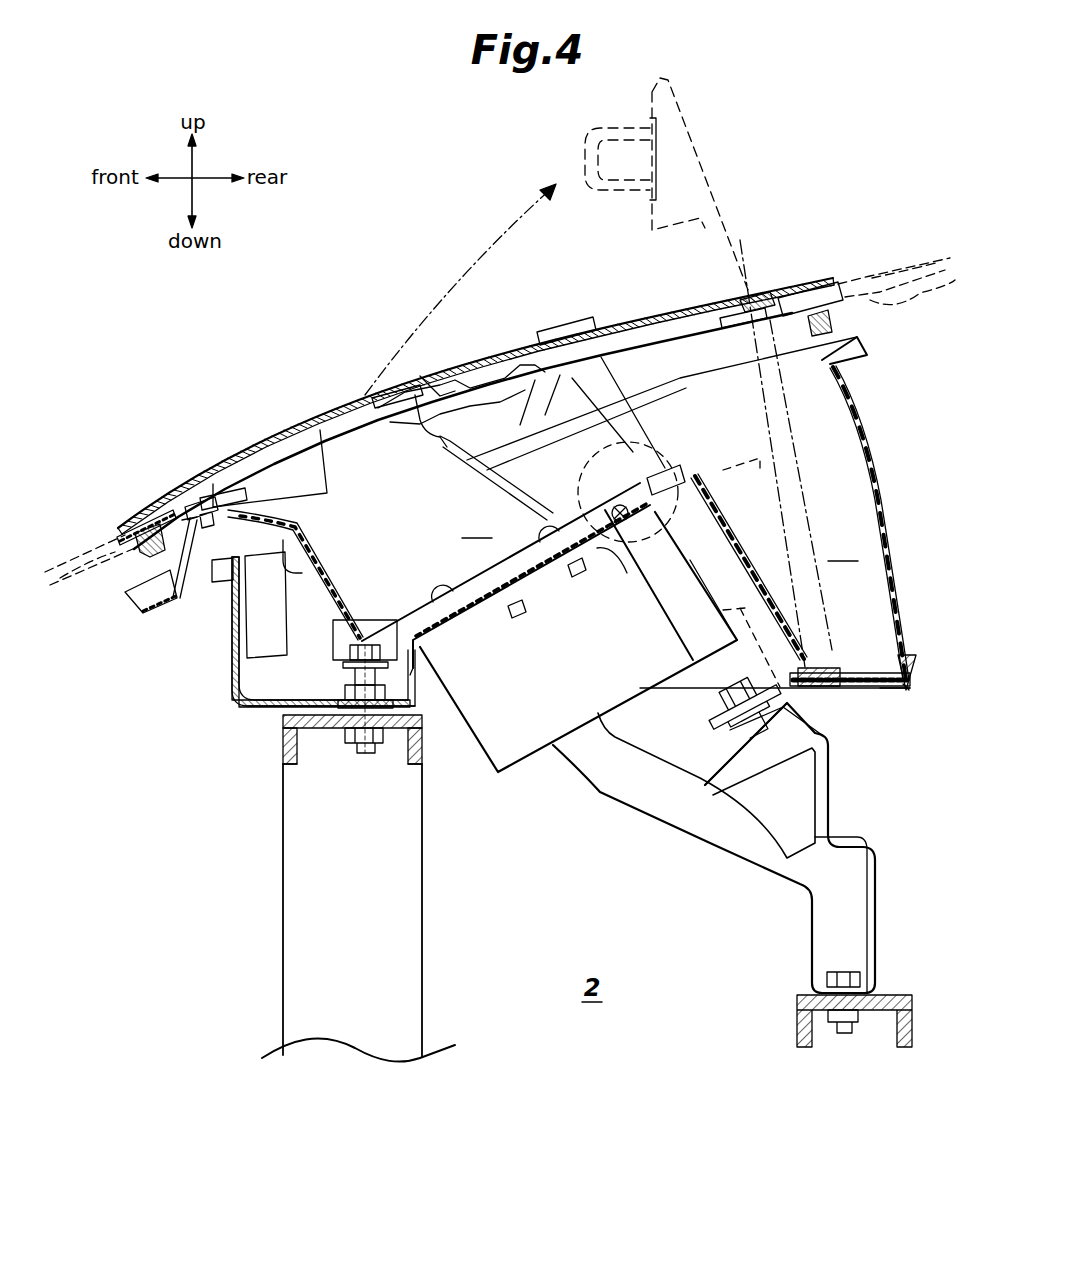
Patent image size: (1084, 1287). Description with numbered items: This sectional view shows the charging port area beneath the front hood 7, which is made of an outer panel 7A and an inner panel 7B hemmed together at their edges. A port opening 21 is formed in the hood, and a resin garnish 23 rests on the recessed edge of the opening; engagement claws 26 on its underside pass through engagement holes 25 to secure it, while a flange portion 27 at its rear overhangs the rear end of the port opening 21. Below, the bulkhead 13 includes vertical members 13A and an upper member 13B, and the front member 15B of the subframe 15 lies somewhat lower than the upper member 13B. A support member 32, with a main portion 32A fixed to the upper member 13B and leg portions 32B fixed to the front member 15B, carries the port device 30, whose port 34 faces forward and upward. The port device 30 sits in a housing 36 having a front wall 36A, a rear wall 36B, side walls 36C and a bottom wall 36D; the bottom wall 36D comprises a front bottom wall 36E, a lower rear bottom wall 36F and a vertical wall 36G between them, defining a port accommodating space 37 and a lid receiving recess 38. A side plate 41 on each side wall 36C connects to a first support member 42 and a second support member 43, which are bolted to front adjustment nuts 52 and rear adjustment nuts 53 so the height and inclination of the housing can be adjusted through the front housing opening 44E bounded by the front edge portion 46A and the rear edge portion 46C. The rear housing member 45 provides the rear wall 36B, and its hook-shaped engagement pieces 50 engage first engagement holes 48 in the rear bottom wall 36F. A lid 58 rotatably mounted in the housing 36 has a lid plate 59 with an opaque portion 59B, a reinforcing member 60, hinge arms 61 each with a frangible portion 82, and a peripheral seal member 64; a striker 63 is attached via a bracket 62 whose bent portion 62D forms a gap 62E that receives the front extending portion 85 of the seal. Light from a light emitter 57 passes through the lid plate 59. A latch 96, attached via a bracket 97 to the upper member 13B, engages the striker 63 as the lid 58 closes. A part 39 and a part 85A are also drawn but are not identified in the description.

The front hood 7 is at (938, 262).
The outer panel 7A is at (893, 265).
The inner panel 7B is at (918, 296).
The bulkhead 13 is at (342, 908).
The vertical members 13A is at (422, 950).
The upper member 13B is at (300, 755).
The subframe 15 is at (810, 1066).
The front member 15B is at (800, 1048).
The port opening 21 is at (785, 300).
The garnish 23 is at (795, 297).
The engagement holes 25 is at (812, 305).
The engagement claws 26 is at (862, 330).
The flange portion 27 is at (748, 298).
The port device 30 is at (503, 714).
The support member 32 is at (620, 797).
The main portion 32A is at (545, 585).
The leg portions 32B is at (813, 870).
The port 34 is at (447, 580).
The housing 36 is at (891, 508).
The front wall 36A is at (318, 560).
The rear wall 36B is at (880, 505).
The side walls 36C is at (603, 330).
The bottom wall 36D is at (850, 690).
The front bottom wall 36E is at (370, 757).
The rear bottom wall 36F is at (892, 690).
The vertical wall 36G is at (722, 542).
The port accommodating space 37 is at (285, 600).
The lid receiving recess 38 is at (800, 453).
The reinforcement 39 is at (496, 487).
The side plate 41 is at (295, 695).
The first support member 42 is at (300, 700).
The second support member 43 is at (700, 690).
The front housing opening 44E is at (473, 610).
The rear housing member 45 is at (904, 418).
The front edge portion 46A is at (180, 587).
The rear edge portion 46C is at (838, 690).
The first engagement holes 48 is at (903, 668).
The engagement pieces 50 is at (910, 686).
The front adjustment nuts 52 is at (305, 722).
The rear adjustment nuts 53 is at (760, 775).
The light emitter 57 is at (665, 470).
The lid 58 is at (455, 248).
The lid plate 59 is at (672, 305).
The opaque portion 59B is at (447, 385).
The reinforcing member 60 is at (500, 365).
The hinge arms 61 is at (420, 376).
The bracket 62 is at (345, 428).
The bent portion 62D is at (233, 437).
The gap 62E is at (217, 487).
The striker 63 is at (300, 510).
The seal member 64 is at (747, 336).
The frangible portion 82 is at (548, 360).
The front extending portion 85 is at (190, 490).
The bracket flange 85A is at (185, 490).
The latch 96 is at (245, 632).
The bracket 97 is at (258, 676).